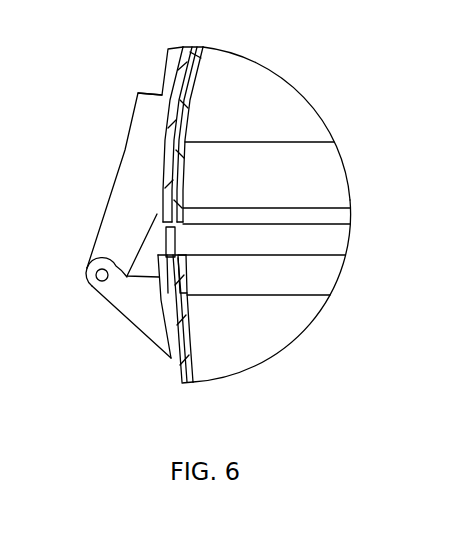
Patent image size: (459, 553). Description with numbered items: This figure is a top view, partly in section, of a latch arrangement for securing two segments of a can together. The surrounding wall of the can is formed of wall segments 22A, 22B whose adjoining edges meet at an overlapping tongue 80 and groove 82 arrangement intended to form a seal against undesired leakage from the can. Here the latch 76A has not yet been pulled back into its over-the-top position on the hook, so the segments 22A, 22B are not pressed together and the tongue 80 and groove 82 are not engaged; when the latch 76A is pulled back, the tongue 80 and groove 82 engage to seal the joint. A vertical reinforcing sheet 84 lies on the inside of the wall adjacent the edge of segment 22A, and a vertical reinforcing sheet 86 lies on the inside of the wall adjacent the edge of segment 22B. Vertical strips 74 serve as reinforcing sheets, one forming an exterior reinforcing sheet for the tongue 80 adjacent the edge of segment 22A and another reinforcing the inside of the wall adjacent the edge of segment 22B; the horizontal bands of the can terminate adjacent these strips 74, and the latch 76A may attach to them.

The wall segment 22A is at (222, 350).
The wall segment 22B is at (237, 77).
The vertical strips 74 is at (160, 167).
The latch 76A is at (122, 303).
The tongue 80 is at (168, 238).
The groove 82 is at (162, 194).
The vertical reinforcing sheet 84 is at (187, 278).
The vertical reinforcing sheet 86 is at (190, 168).